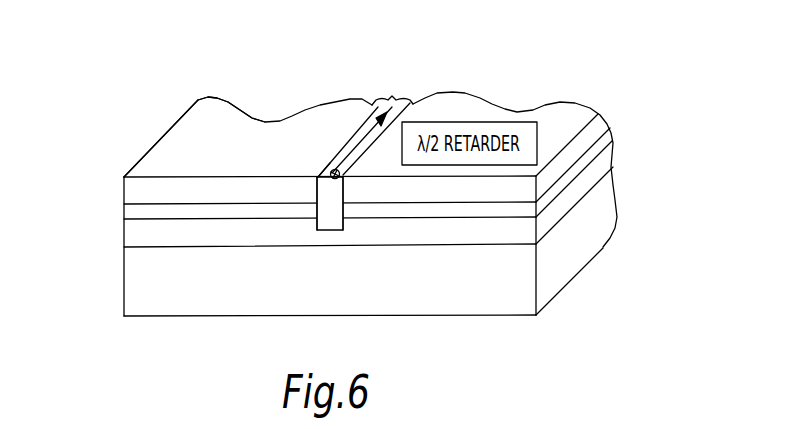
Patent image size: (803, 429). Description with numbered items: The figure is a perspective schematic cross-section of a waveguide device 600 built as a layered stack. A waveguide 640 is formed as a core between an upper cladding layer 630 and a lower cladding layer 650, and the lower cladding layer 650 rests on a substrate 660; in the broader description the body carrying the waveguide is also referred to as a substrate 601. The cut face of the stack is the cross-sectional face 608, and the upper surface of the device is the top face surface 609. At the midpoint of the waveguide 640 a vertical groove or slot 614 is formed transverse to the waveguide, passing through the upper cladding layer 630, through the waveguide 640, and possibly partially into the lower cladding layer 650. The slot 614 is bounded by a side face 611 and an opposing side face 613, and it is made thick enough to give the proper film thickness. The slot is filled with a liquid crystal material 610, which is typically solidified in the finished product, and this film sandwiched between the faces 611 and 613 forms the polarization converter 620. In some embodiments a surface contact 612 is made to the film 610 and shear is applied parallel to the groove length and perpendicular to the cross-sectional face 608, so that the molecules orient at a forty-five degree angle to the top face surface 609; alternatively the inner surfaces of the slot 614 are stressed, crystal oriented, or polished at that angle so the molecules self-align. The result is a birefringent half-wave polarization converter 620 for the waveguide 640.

The waveguide device 600 is at (622, 41).
The substrate 601 is at (511, 300).
The cross-sectional face 608 is at (166, 188).
The top face surface 609 is at (213, 120).
The liquid crystal material 610 is at (347, 157).
The side face of groove 611 is at (314, 187).
The surface contact 612 is at (330, 170).
The opposing side face of groove 613 is at (345, 188).
The vertical groove or slot 614 is at (325, 231).
The polarization converter 620 is at (393, 95).
The upper cladding layer 630 is at (130, 190).
The waveguide 640 is at (130, 211).
The lower cladding layer 650 is at (130, 237).
The substrate 660 is at (130, 285).